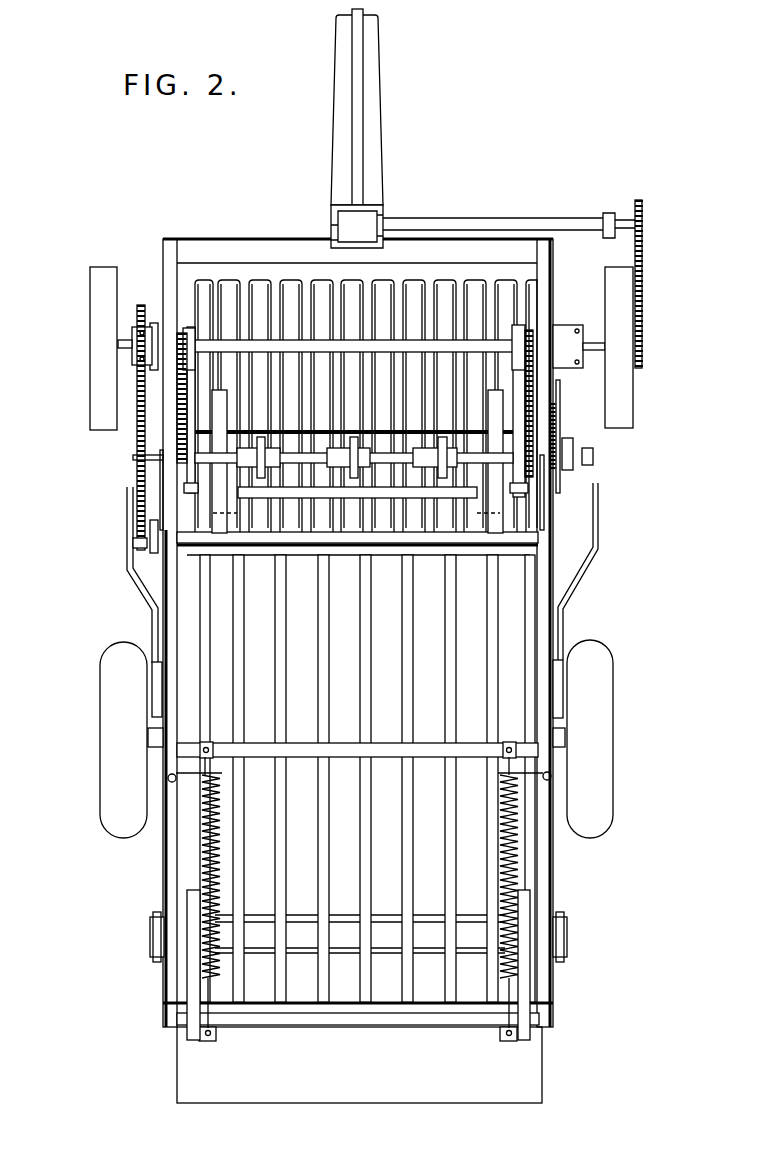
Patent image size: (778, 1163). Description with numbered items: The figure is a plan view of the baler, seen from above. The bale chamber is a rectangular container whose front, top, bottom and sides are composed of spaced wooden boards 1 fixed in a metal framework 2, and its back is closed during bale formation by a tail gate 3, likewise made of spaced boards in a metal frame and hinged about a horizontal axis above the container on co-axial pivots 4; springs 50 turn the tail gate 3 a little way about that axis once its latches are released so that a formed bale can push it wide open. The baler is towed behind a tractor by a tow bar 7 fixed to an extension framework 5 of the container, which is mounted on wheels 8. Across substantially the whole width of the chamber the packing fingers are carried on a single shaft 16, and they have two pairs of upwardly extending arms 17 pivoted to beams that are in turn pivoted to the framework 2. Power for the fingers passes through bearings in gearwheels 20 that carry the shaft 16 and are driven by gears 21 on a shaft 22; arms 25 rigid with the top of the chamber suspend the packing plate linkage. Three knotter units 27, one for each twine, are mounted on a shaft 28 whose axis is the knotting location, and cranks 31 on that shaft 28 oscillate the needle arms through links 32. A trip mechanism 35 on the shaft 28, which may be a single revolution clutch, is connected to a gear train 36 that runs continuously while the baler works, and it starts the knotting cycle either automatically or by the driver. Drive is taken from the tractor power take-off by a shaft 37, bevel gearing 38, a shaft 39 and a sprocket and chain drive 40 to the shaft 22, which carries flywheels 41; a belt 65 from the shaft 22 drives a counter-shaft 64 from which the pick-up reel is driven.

The spaced wooden boards 1 is at (345, 975).
The metal framework 2 is at (168, 862).
The tail gate 3 is at (470, 1030).
The co-axial pivots 4 is at (190, 897).
The extension framework 5 is at (192, 250).
The tow bar 7 is at (380, 96).
The wheels 8 is at (127, 735).
The shaft 16 is at (383, 440).
The upwardly extending arms 17 is at (205, 402).
The gearwheels 20 is at (195, 372).
The gears 21 is at (180, 335).
The shaft 22 is at (270, 345).
The arms 25 is at (160, 500).
The knotter units 27 is at (440, 455).
The shaft 28 is at (158, 457).
The cranks 31 is at (160, 463).
The links 32 is at (128, 570).
The trip mechanism 35 is at (585, 472).
The gear train 36 is at (565, 445).
The shaft 37 is at (355, 142).
The bevel gearing 38 is at (358, 222).
The shaft 39 is at (515, 225).
The sprocket and chain drive 40 is at (642, 278).
The flywheels 41 is at (118, 317).
The springs 50 is at (205, 825).
The counter-shaft 64 is at (140, 542).
The belt 65 is at (150, 345).